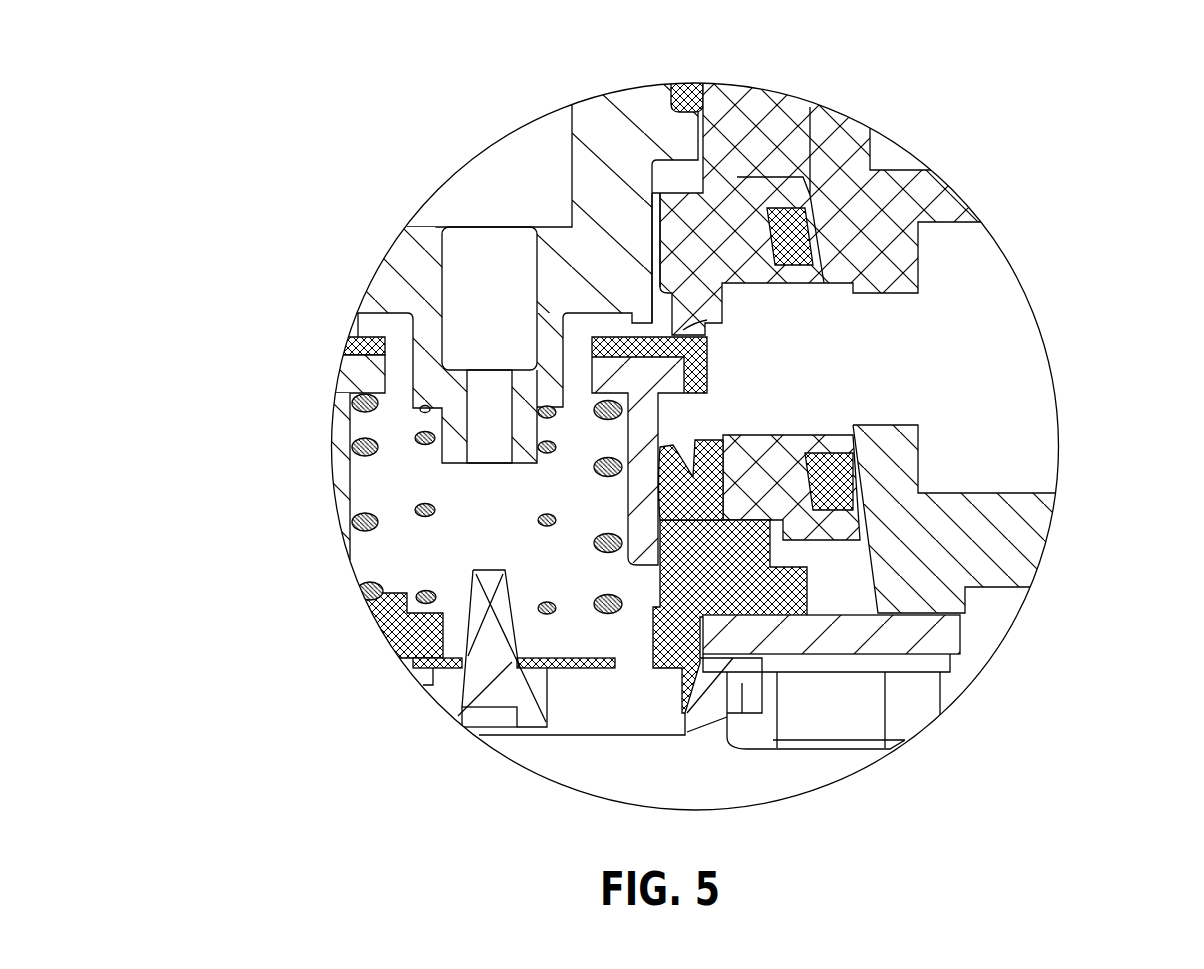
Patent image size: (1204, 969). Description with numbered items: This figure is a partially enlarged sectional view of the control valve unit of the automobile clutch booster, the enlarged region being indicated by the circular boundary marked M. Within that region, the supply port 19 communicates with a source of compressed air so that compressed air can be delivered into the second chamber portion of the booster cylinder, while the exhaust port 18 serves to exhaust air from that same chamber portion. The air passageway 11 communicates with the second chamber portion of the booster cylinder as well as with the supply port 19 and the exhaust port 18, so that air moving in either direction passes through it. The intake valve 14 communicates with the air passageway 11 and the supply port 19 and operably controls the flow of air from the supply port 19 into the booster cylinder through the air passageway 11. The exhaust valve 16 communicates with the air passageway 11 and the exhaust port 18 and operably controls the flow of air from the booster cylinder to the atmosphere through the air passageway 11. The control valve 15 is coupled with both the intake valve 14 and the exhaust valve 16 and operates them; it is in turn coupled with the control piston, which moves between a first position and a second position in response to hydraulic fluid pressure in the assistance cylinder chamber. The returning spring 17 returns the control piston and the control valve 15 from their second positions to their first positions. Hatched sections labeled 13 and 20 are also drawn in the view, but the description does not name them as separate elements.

The air passageway 11 is at (367, 327).
The retainer body 13 is at (738, 178).
The intake valve 14 is at (629, 416).
The control valve 15 is at (647, 470).
The exhaust valve 16 is at (652, 328).
The returning spring 17 is at (540, 515).
The exhaust port 18 is at (603, 712).
The supply port 19 is at (977, 353).
The chamber 20 is at (490, 177).
The detail region M is at (987, 657).